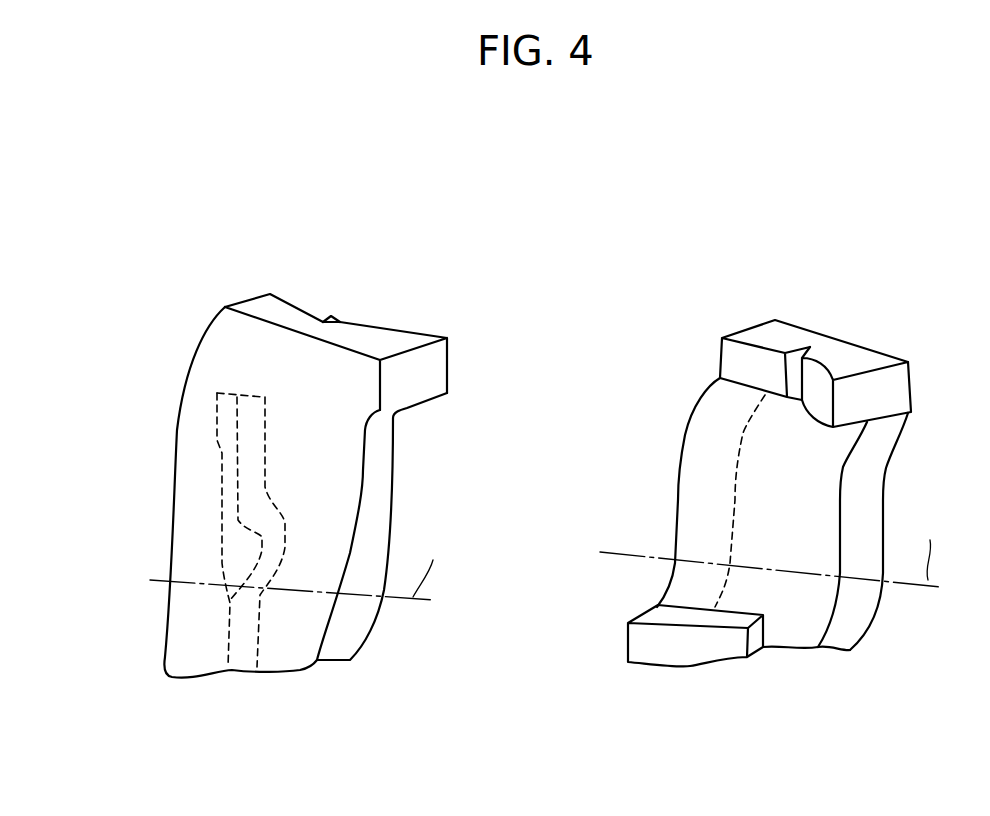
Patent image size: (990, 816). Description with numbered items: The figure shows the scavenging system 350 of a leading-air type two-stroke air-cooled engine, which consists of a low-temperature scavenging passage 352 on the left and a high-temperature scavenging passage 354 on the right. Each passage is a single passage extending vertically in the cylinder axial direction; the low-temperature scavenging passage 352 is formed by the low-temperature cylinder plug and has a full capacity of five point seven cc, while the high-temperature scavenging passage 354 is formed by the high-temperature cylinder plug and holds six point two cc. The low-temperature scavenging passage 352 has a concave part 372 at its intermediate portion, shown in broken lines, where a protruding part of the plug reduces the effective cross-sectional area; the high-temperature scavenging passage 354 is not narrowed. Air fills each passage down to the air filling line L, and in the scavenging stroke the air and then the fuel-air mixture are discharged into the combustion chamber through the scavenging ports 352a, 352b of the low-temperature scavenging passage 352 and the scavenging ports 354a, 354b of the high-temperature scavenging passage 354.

The scavenging system 350 is at (955, 218).
The low-temperature scavenging passage 352 is at (235, 287).
The scavenging port 352a is at (402, 330).
The scavenging port 352b is at (322, 318).
The high-temperature scavenging passage 354 is at (883, 328).
The scavenging port 354a is at (818, 400).
The scavenging port 354b is at (728, 360).
The concave part 372 is at (312, 532).